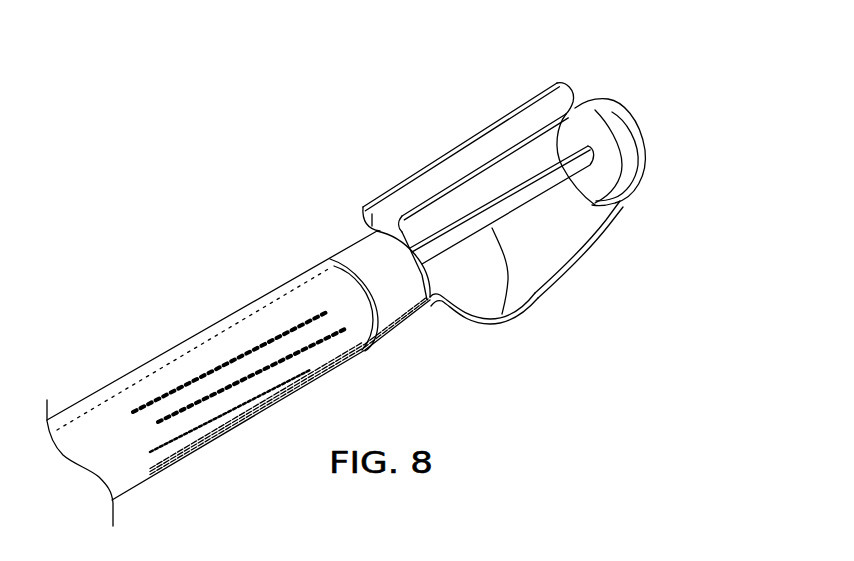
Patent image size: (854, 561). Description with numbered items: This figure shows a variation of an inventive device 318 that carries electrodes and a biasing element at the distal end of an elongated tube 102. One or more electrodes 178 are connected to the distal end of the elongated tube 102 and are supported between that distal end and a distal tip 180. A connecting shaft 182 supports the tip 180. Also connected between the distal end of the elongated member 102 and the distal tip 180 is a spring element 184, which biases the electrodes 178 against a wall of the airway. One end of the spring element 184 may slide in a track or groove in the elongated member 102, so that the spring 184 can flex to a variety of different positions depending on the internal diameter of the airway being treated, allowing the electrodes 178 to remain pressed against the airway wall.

The elongated tube 102 is at (197, 328).
The inventive device 318 is at (528, 201).
The electrodes 178 is at (468, 170).
The distal tip 180 is at (628, 124).
The connecting shaft 182 is at (503, 316).
The spring element 184 is at (583, 263).